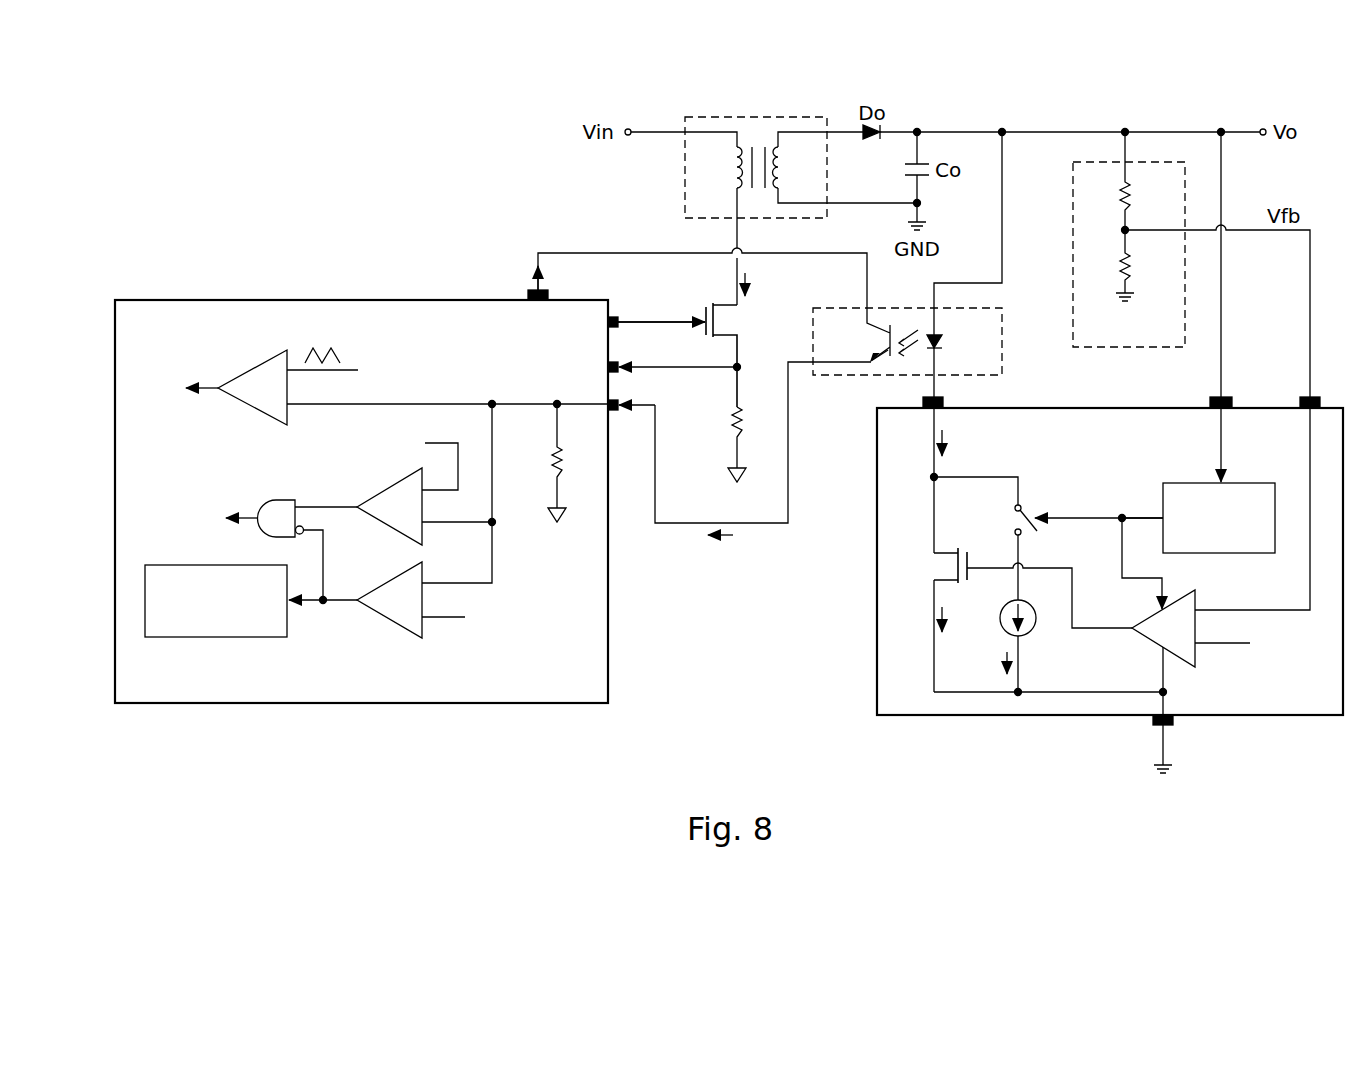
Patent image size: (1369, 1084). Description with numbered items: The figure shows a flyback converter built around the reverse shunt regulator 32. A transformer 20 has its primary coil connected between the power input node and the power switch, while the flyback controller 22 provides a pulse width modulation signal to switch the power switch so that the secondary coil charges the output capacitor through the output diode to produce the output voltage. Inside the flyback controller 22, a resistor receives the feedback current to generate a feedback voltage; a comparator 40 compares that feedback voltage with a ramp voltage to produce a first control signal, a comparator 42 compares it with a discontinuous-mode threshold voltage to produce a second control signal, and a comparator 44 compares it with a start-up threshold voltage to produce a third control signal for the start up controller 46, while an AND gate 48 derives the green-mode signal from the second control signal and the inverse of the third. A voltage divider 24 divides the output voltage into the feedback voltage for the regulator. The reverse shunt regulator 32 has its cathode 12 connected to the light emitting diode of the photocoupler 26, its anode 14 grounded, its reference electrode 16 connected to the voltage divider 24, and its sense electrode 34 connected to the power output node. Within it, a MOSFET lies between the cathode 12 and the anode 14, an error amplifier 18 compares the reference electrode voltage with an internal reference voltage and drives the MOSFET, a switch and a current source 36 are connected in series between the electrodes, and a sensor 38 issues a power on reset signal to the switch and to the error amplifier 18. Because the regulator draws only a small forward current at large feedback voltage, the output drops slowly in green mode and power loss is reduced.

The cathode 12 is at (930, 390).
The anode 14 is at (1165, 742).
The reference electrode 16 is at (1308, 388).
The error amplifier 18 is at (1180, 660).
The transformer 20 is at (752, 117).
The flyback controller 22 is at (493, 476).
The voltage divider 24 is at (1158, 162).
The photocoupler 26 is at (1002, 347).
The reverse shunt regulator 32 is at (1076, 577).
The sense electrode 34 is at (1216, 393).
The current source 36 is at (1031, 633).
The sensor 38 is at (1187, 482).
The comparator 40 is at (255, 368).
The comparator 42 is at (383, 527).
The comparator 44 is at (387, 620).
The start up controller 46 is at (213, 638).
The AND gate 48 is at (271, 500).